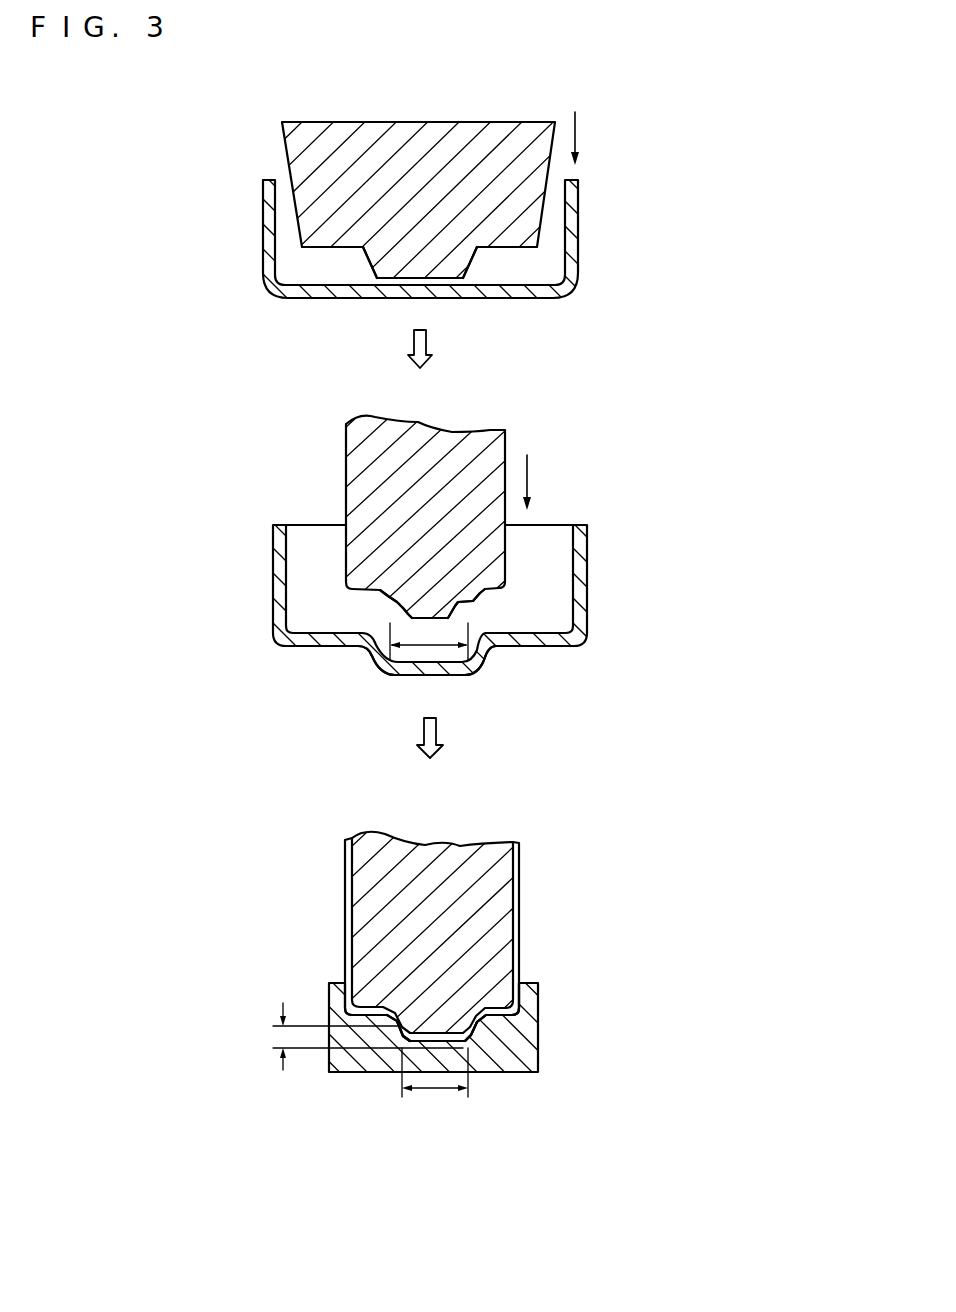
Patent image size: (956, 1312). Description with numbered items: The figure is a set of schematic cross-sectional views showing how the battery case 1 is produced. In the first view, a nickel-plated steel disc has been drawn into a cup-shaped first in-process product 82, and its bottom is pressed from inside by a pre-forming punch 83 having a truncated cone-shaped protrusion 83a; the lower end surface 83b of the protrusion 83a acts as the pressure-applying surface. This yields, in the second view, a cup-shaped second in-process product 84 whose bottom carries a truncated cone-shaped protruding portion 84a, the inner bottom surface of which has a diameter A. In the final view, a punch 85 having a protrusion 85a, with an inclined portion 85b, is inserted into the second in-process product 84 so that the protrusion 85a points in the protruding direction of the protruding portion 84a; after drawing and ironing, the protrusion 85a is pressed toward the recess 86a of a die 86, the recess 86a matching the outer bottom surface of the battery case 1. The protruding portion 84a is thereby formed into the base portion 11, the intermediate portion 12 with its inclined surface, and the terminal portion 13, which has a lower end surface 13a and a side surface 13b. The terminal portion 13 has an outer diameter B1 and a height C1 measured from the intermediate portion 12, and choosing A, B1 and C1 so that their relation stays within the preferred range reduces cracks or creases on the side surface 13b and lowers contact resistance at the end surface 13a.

The pre-forming punch 83 is at (522, 200).
The protrusion 83a is at (460, 260).
The lower end surface 83b is at (443, 290).
The first in-process product 82 is at (572, 287).
The punch 85 is at (365, 467).
The protrusion 85a is at (408, 602).
The inclined portion 85b is at (475, 600).
The second in-process product 84 is at (582, 598).
The protruding portion 84a is at (418, 668).
The diameter of the inner bottom surface of the protruding portion A is at (430, 645).
The battery case 1 is at (519, 917).
The base portion 11 is at (503, 993).
The intermediate portion 12 is at (480, 1026).
The terminal portion 13 is at (431, 1033).
The lower end surface 13a is at (472, 1050).
The side surface 13b is at (402, 1033).
The die 86 is at (523, 1058).
The recess 86a is at (417, 1047).
The outer diameter of the terminal portion B1 is at (435, 1085).
The height of the terminal portion C1 is at (295, 1036).